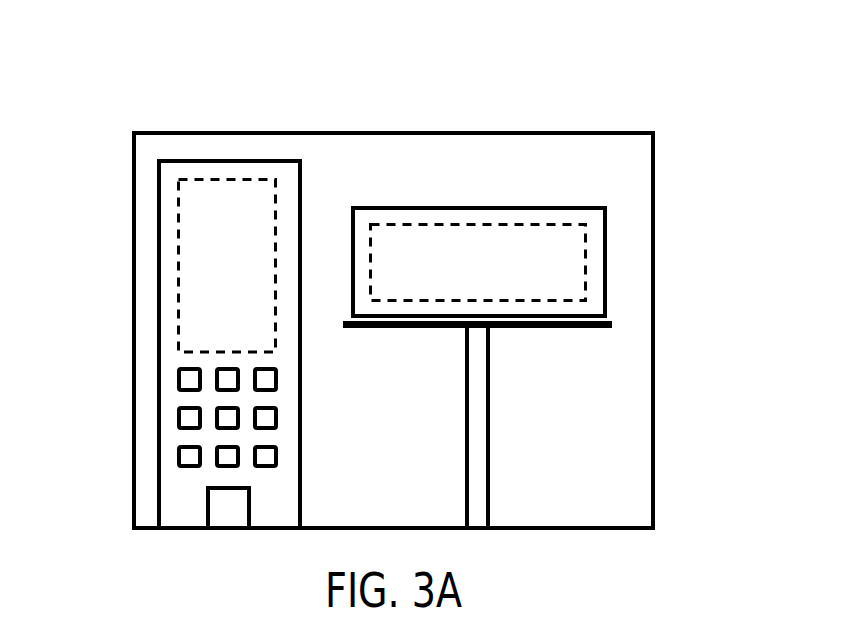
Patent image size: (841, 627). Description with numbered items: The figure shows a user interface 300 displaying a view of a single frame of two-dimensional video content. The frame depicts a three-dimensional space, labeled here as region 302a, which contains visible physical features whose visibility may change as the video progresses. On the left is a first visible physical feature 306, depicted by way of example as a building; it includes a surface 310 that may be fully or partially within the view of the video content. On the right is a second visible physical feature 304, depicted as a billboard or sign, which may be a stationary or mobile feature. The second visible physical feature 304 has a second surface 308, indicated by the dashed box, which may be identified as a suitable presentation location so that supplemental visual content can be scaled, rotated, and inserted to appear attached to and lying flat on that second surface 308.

The user interface 300 is at (205, 68).
The background region 302a is at (352, 162).
The second visible physical feature 304 is at (608, 275).
The first visible physical feature 306 is at (158, 343).
The second surface 308 is at (500, 250).
The surface 310 is at (200, 315).